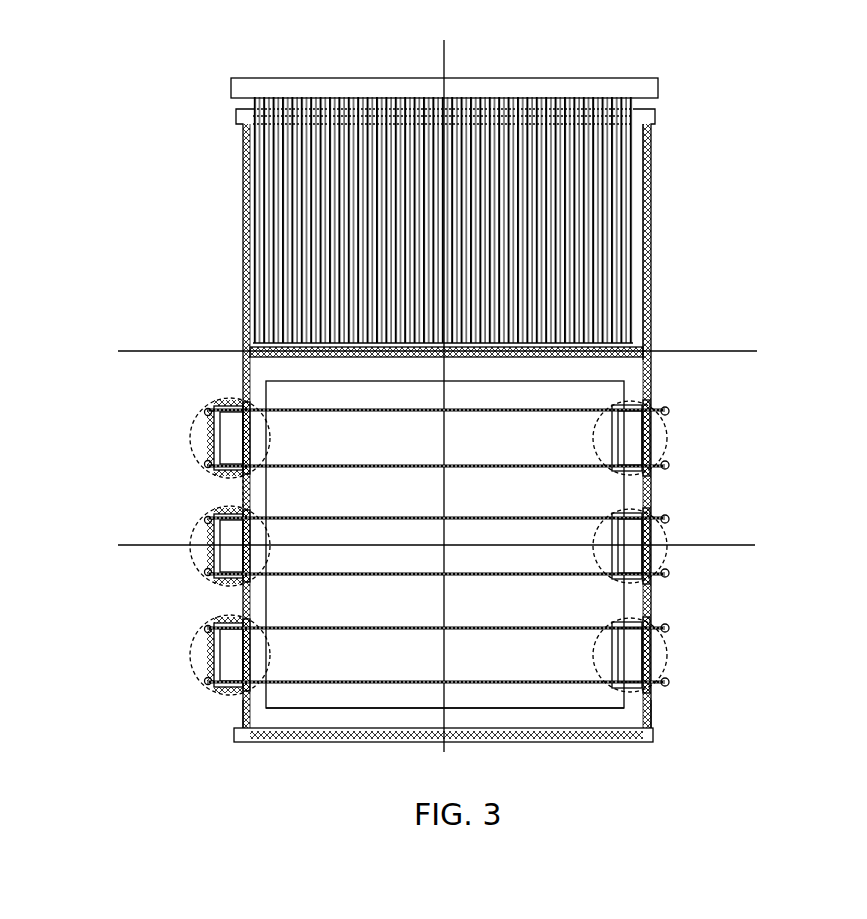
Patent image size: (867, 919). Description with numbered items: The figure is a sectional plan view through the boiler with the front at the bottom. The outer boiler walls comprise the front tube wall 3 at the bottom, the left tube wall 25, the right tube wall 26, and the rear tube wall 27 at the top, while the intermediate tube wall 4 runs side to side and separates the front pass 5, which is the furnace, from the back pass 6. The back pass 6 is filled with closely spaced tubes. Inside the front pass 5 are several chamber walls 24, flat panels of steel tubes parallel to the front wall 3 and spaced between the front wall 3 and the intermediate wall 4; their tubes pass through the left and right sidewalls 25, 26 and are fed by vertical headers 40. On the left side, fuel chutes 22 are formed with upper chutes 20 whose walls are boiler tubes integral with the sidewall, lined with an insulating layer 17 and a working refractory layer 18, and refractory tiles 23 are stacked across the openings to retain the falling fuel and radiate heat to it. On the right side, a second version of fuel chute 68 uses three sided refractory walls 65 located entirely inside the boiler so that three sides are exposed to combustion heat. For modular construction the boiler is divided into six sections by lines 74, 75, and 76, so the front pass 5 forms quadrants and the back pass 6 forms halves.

The front tube wall 3 is at (505, 740).
The intermediate tube wall 4 is at (643, 352).
The front pass 5 is at (51, 545).
The back pass 6 is at (51, 236).
The insulating layer 17 is at (266, 386).
The working refractory layer 18 is at (208, 410).
The upper chute 20 is at (205, 414).
The fuel chute 22 is at (203, 465).
The refractory tiles 23 is at (240, 478).
The chamber walls 24 is at (372, 684).
The left tube wall 25 is at (244, 710).
The right tube wall 26 is at (653, 714).
The rear tube wall 27 is at (632, 110).
The vertical headers 40 is at (206, 684).
The three sided refractory walls 65 is at (648, 400).
The fuel chute 68 is at (668, 438).
The division line 74 is at (444, 398).
The division line 75 is at (440, 545).
The division line 76 is at (440, 351).